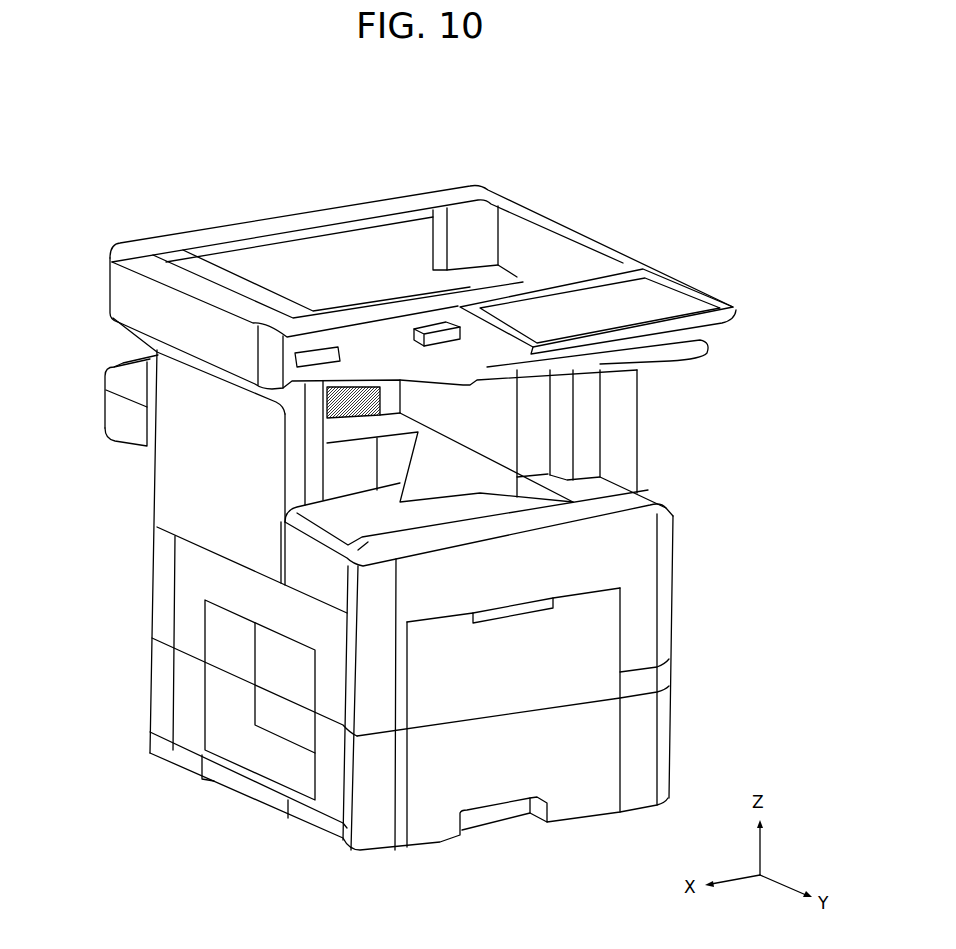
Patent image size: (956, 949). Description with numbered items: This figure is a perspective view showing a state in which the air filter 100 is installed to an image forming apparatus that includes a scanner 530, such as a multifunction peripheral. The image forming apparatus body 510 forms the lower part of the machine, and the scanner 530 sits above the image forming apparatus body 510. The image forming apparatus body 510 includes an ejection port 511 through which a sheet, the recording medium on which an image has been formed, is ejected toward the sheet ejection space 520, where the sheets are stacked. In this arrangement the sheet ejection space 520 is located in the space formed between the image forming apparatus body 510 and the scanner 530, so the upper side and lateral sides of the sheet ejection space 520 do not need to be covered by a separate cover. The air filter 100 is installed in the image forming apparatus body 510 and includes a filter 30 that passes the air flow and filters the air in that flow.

The air filter 100 is at (86, 354).
The scanner 530 is at (650, 196).
The sheet ejection space 520 is at (447, 477).
The image forming apparatus body 510 is at (734, 533).
The ejection port 511 is at (312, 506).
The filter 30 is at (333, 408).